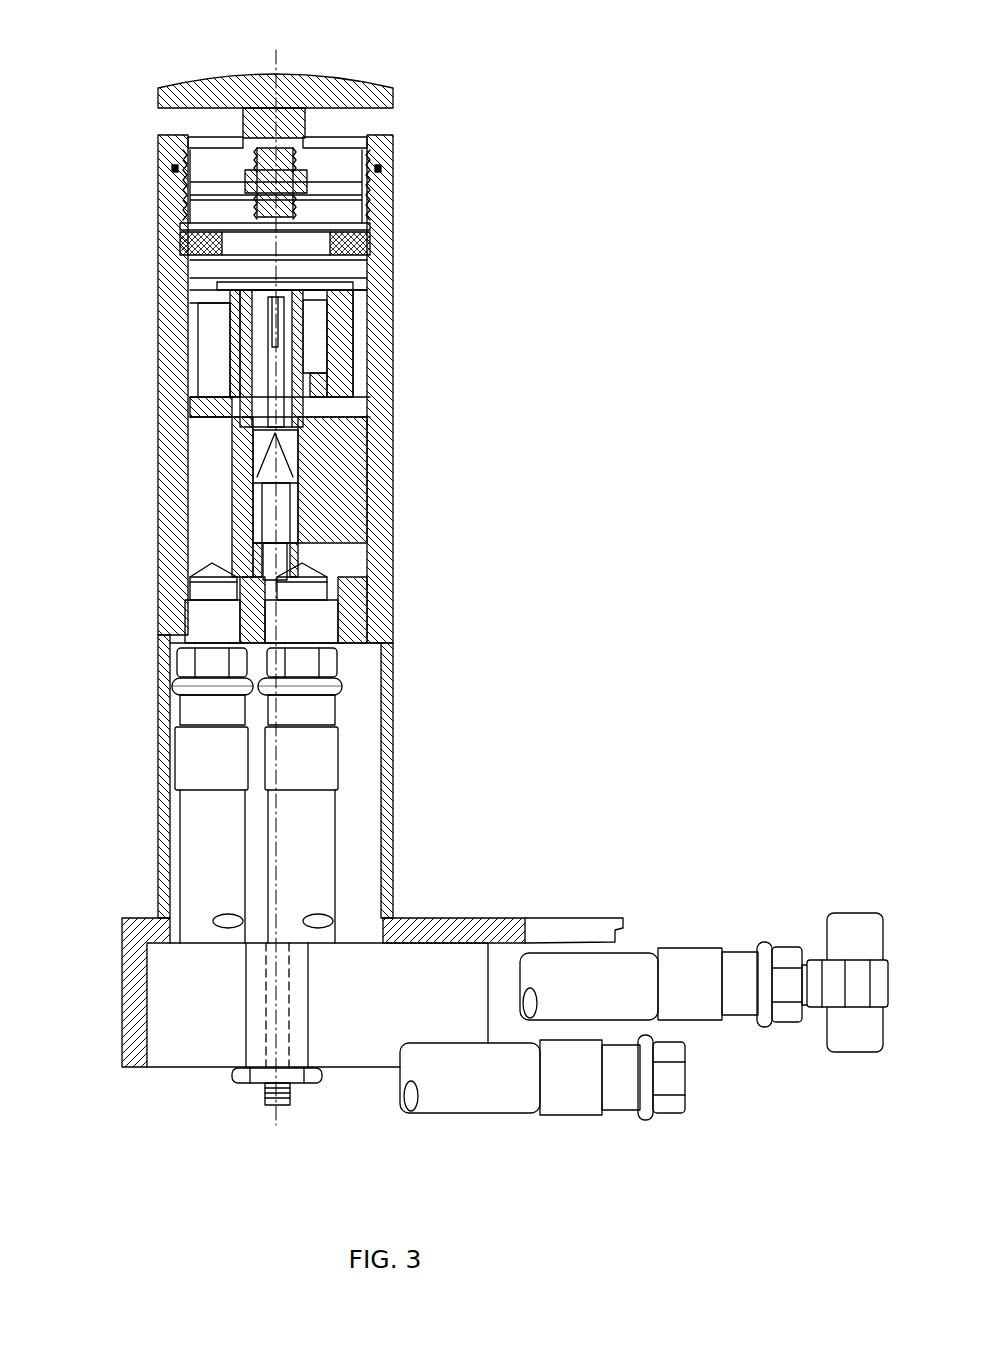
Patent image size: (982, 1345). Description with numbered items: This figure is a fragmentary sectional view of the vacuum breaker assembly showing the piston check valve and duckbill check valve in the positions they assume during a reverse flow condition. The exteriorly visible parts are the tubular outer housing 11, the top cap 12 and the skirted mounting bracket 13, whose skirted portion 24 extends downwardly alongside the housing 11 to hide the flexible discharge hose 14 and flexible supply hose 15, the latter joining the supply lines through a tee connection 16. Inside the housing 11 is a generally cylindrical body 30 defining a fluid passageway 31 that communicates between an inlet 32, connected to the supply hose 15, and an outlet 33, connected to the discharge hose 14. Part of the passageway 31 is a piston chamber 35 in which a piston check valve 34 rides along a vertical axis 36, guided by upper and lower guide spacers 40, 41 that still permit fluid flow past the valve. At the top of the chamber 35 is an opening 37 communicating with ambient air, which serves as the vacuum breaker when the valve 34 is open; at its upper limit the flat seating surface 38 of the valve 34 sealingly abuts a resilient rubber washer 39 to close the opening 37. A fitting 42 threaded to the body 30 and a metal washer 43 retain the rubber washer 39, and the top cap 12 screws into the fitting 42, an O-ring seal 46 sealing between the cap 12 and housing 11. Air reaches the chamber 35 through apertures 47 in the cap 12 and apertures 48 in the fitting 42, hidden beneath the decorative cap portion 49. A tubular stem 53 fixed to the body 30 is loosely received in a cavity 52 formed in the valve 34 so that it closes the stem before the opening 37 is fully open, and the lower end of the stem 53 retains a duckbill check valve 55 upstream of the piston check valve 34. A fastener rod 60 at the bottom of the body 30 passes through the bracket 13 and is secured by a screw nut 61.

The tubular outer housing 11 is at (392, 480).
The top cap 12 is at (195, 88).
The skirted mounting bracket 13 is at (545, 928).
The flexible discharge hose 14 is at (182, 750).
The flexible supply hose 15 is at (332, 750).
The tee connection 16 is at (838, 945).
The skirted portion 24 is at (128, 978).
The body 30 is at (370, 413).
The fluid passageway 31 is at (205, 335).
The inlet 32 is at (305, 625).
The outlet 33 is at (205, 625).
The piston check valve 34 is at (230, 380).
The piston chamber 35 is at (365, 245).
The vertical axis 36 is at (280, 373).
The opening 37 is at (233, 262).
The flat seating surface 38 is at (240, 284).
The resilient rubber washer 39 is at (225, 228).
The guide spacers 40 is at (210, 300).
The guide spacers 41 is at (207, 407).
The fitting 42 is at (347, 183).
The metal washer 43 is at (372, 215).
The resilient O-ring seal 46 is at (185, 163).
The apertures 47 is at (207, 138).
The apertures 48 is at (202, 178).
The cap portion 49 is at (368, 88).
The cavity 52 is at (308, 342).
The stem 53 is at (300, 305).
The duckbill check valve 55 is at (302, 492).
The fastener rod 60 is at (290, 1005).
The screw nut 61 is at (245, 1078).